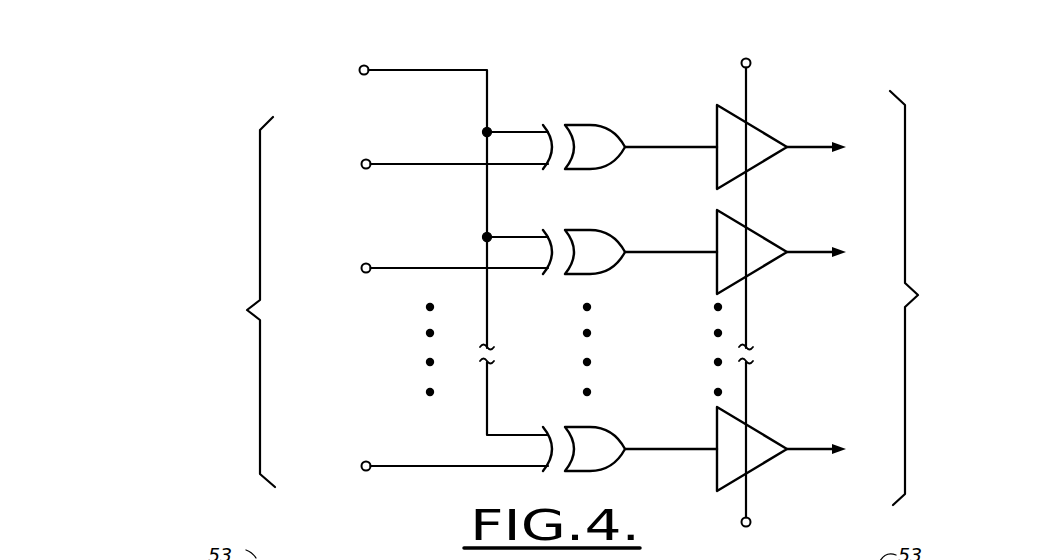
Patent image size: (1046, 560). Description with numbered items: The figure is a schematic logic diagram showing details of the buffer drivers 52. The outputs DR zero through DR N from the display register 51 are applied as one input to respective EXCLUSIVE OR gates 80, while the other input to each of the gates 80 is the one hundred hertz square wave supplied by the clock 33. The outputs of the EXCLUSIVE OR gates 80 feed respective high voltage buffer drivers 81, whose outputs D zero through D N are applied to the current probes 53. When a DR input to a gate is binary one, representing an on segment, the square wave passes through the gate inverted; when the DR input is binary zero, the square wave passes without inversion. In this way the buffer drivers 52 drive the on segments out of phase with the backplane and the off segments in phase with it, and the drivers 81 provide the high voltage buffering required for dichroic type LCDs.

The clock 33 is at (346, 85).
The display register 51 is at (222, 323).
The buffer drivers 52 is at (647, 100).
The current probes 53 is at (1015, 316).
The EXCLUSIVE OR gate 80 is at (587, 125).
The high voltage buffer driver 81 is at (760, 128).